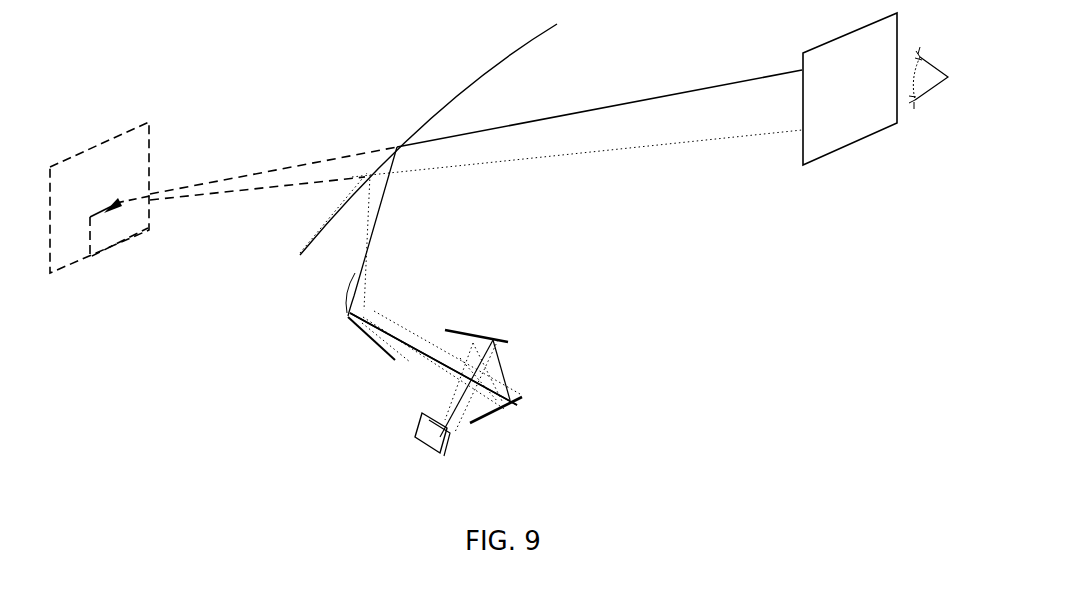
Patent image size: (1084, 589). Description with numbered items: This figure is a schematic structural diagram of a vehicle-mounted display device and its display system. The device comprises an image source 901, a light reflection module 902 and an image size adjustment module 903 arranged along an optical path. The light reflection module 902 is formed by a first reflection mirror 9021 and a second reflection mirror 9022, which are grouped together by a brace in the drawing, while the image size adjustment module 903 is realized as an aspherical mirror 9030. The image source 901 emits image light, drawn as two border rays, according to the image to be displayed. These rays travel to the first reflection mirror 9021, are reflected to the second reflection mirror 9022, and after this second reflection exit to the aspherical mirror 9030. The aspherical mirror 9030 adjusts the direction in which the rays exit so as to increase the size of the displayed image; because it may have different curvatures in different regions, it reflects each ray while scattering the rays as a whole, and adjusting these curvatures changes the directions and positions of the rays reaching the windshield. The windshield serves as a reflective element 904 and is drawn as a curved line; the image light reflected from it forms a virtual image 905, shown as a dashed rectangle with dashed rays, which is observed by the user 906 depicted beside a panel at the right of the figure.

The image source 901 is at (402, 441).
The light reflection module 902 is at (580, 358).
The first reflection mirror 9021 is at (518, 331).
The second reflection mirror 9022 is at (526, 404).
The image size adjustment module 903 is at (343, 323).
The aspherical mirror 9030 is at (433, 359).
The reflective element 904 is at (540, 38).
The virtual image 905 is at (100, 214).
The user 906 is at (928, 114).